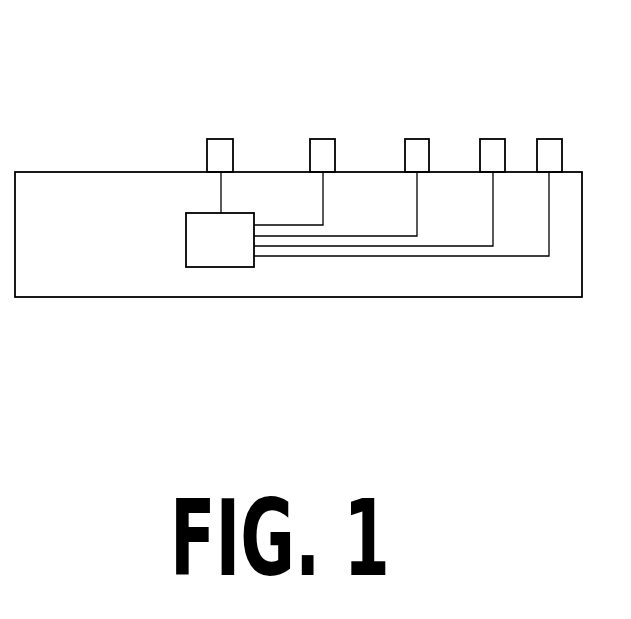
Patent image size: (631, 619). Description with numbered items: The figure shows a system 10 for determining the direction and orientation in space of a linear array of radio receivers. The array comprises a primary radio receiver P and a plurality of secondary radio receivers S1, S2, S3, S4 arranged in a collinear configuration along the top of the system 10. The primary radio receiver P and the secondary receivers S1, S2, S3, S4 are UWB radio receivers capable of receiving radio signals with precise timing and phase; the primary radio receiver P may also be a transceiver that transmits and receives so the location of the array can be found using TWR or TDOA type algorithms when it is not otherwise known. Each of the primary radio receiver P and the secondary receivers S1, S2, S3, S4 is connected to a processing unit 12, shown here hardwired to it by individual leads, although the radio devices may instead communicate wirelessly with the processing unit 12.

The system 10 is at (133, 118).
The processing unit 12 is at (218, 248).
The primary radio receiver P is at (222, 148).
The secondary radio receiver S1 is at (318, 148).
The secondary radio receiver S2 is at (415, 148).
The secondary radio receiver S3 is at (490, 148).
The secondary radio receiver S4 is at (550, 148).